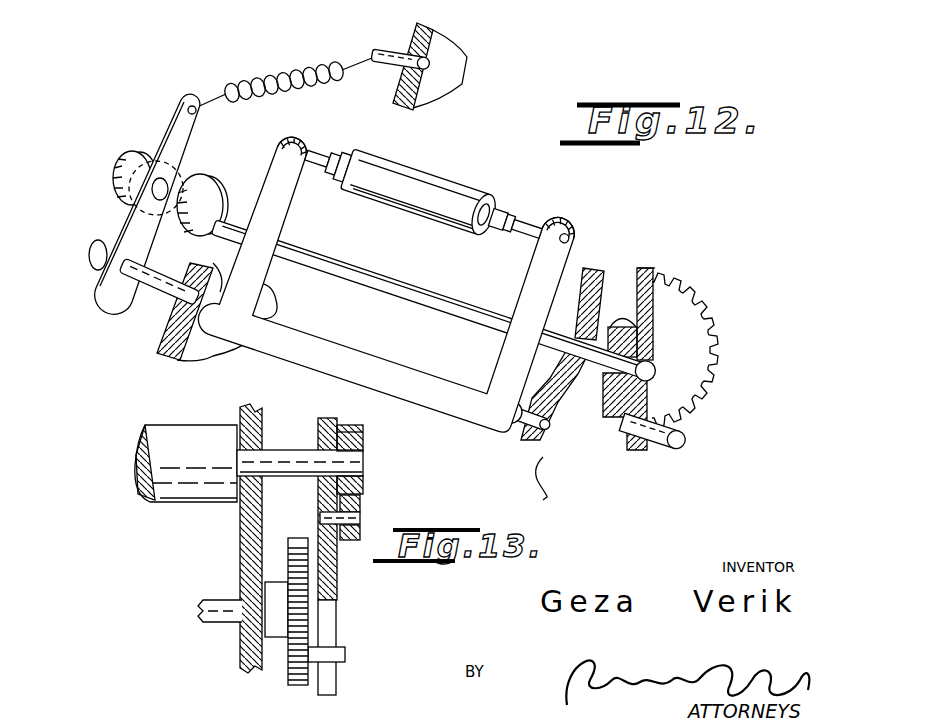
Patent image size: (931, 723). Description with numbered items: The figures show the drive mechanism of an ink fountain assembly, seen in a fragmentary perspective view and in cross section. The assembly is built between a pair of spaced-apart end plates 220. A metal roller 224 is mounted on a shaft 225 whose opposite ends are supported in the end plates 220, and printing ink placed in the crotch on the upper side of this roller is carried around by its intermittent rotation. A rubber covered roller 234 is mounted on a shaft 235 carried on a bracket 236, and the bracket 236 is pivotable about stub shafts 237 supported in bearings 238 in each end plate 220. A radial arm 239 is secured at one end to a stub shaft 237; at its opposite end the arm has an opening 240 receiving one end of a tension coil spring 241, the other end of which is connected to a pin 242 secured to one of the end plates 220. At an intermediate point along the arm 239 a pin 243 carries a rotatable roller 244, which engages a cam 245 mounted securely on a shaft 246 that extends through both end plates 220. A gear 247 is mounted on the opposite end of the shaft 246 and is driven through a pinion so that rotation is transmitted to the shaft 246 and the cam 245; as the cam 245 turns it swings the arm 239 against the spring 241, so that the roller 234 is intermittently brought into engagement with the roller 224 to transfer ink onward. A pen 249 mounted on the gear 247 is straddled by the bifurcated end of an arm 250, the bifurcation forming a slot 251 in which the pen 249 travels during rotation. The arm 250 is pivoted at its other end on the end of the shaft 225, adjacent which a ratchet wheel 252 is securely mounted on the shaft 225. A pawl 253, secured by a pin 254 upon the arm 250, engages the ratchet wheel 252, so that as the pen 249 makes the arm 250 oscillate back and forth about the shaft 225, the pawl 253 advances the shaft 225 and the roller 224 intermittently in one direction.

In FIG. 12, the end plate 220 is at (450, 58).
In FIG. 13, the end plate 220 is at (251, 538).
In FIG. 13, the metal roller 224 is at (165, 445).
In FIG. 13, the shaft 225 is at (368, 465).
In FIG. 12, the rubber covered roller 234 is at (427, 190).
In FIG. 12, the shaft 235 is at (535, 226).
In FIG. 12, the bracket 236 is at (290, 220).
In FIG. 12, the stub shaft 237 is at (160, 296).
In FIG. 12, the bearing 238 is at (180, 356).
In FIG. 12, the radial arm 239 is at (162, 128).
In FIG. 12, the opening 240 is at (190, 100).
In FIG. 12, the tension coil spring 241 is at (255, 78).
In FIG. 12, the pin 242 is at (392, 20).
In FIG. 12, the pin 243 is at (150, 198).
In FIG. 12, the rotatable roller 244 is at (116, 172).
In FIG. 12, the cam 245 is at (218, 192).
In FIG. 12, the shaft 246 is at (385, 275).
In FIG. 12, the gear 247 is at (680, 348).
In FIG. 13, the gear 247 is at (300, 688).
In FIG. 12, the pen 249 is at (687, 439).
In FIG. 13, the pen 249 is at (345, 655).
In FIG. 13, the arm 250 is at (338, 575).
In FIG. 13, the slot 251 is at (327, 622).
In FIG. 13, the ratchet wheel 252 is at (365, 443).
In FIG. 13, the pawl 253 is at (362, 528).
In FIG. 13, the pin 254 is at (360, 510).